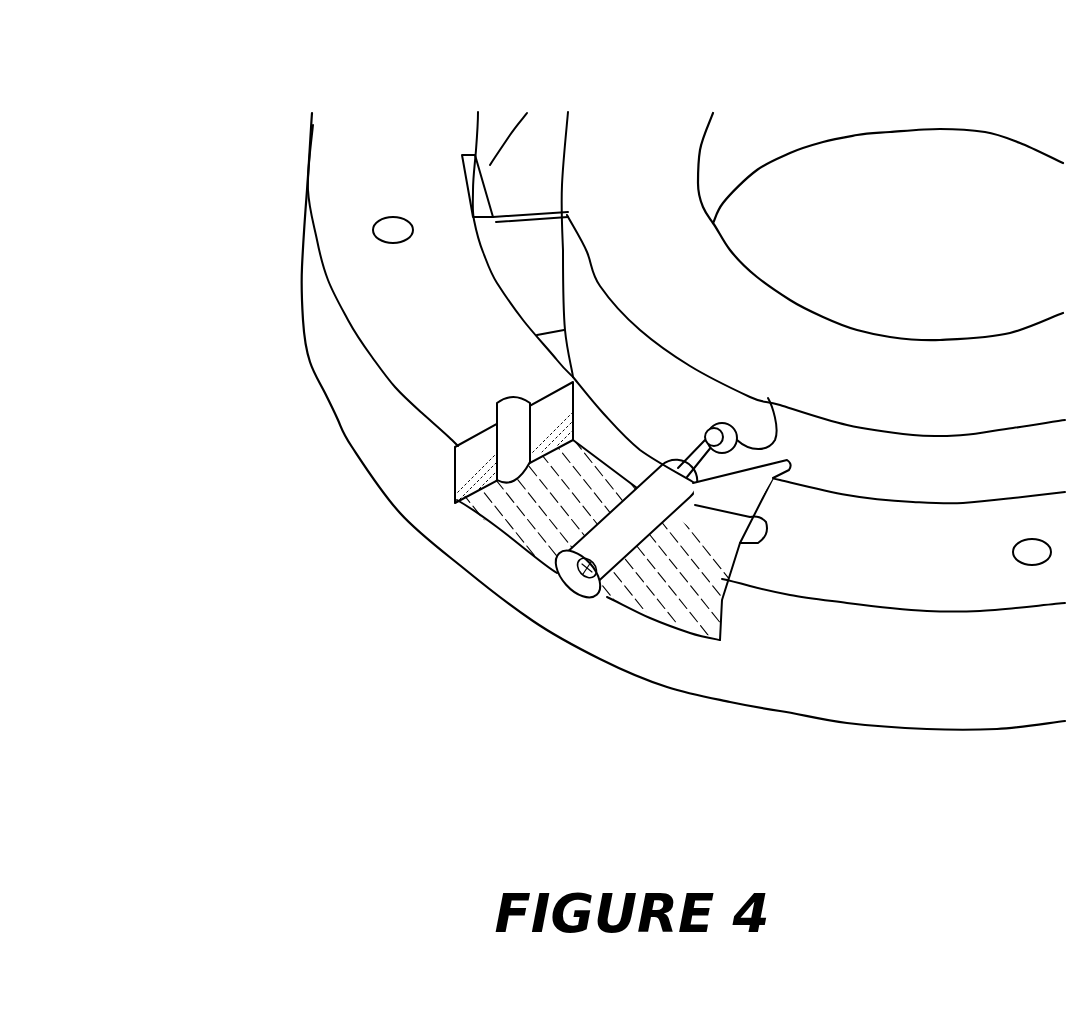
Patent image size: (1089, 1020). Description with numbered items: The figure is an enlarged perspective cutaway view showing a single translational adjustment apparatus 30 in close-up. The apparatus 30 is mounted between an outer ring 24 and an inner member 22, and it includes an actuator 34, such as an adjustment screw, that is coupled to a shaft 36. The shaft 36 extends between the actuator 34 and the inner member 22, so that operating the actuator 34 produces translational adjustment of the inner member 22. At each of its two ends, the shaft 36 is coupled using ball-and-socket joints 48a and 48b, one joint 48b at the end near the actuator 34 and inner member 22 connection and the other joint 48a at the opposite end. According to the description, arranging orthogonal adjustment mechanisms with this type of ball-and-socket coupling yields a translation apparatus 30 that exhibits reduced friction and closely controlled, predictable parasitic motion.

The inner member 22 is at (655, 160).
The outer ring 24 is at (312, 240).
The translational adjustment apparatus 30 is at (405, 586).
The actuator 34 is at (596, 588).
The shaft 36 is at (705, 458).
The ball-and-socket joint 48a is at (752, 462).
The ball-and-socket joint 48b is at (740, 437).